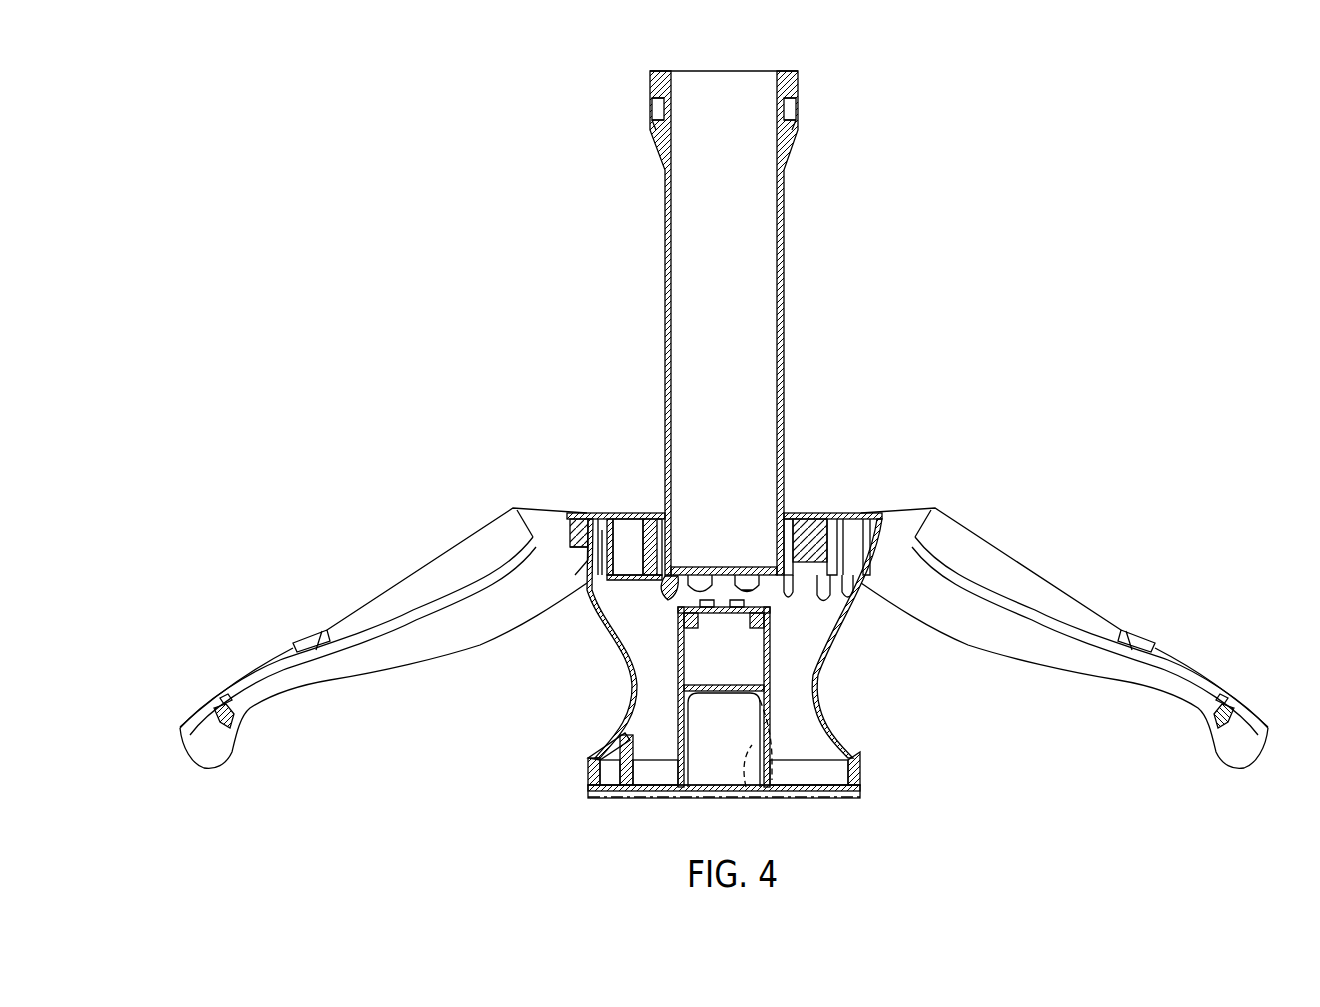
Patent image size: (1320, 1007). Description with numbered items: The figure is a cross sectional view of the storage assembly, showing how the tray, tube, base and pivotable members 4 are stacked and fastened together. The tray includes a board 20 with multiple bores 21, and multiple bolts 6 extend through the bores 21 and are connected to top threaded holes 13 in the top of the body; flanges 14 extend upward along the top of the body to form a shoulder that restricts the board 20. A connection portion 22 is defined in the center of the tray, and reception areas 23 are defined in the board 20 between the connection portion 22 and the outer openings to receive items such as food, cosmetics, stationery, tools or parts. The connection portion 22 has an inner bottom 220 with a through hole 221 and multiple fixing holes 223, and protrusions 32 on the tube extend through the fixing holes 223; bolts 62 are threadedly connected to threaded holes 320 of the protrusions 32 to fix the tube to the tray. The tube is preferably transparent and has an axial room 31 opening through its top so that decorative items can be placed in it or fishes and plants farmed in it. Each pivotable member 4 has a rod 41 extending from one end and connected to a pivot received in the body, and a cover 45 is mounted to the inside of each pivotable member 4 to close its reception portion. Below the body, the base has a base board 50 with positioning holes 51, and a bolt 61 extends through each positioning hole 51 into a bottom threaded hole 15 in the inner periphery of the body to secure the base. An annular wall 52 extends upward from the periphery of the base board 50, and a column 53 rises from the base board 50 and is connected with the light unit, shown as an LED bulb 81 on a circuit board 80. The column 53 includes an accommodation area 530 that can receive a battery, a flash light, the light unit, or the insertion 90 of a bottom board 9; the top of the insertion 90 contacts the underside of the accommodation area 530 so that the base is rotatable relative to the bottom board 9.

The room 31 is at (735, 95).
The protrusions 32 is at (664, 598).
The fixing holes 223 is at (636, 619).
The inner bottom 220 is at (695, 565).
The through hole 221 is at (742, 568).
The threaded holes 320 is at (662, 588).
The bolts 62 is at (678, 600).
The flanges 14 is at (562, 516).
The board 20 is at (580, 525).
The bolts 6 is at (593, 528).
The bores 21 is at (609, 530).
The connection portion 22 is at (651, 555).
The reception areas 23 is at (623, 530).
The LED bulb 81 is at (790, 540).
The circuit board 80 is at (812, 540).
The column 53 is at (768, 645).
The accommodation area 530 is at (766, 698).
The bottom board 9 is at (842, 797).
The insertion 90 is at (750, 798).
The annular wall 52 is at (590, 770).
The positioning holes 51 is at (614, 784).
The bottom threaded holes 15 is at (620, 768).
The bolt 61 is at (628, 745).
The base board 50 is at (822, 780).
The pivotable members 4 is at (697, 633).
The rod 41 is at (560, 534).
The cover 45 is at (308, 636).
The top threaded holes 13 is at (524, 557).